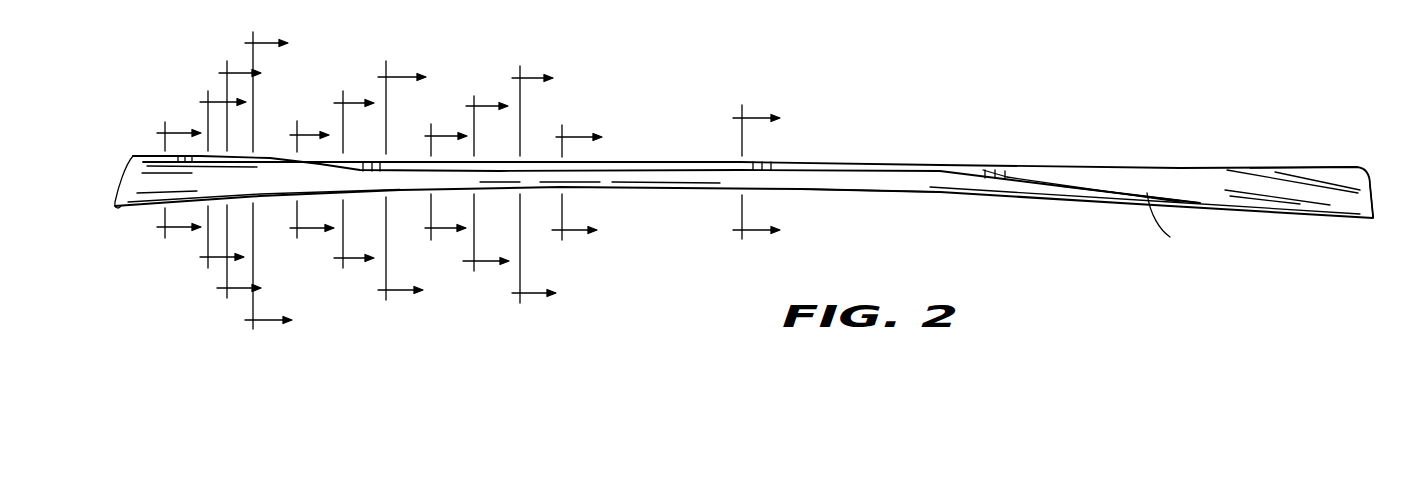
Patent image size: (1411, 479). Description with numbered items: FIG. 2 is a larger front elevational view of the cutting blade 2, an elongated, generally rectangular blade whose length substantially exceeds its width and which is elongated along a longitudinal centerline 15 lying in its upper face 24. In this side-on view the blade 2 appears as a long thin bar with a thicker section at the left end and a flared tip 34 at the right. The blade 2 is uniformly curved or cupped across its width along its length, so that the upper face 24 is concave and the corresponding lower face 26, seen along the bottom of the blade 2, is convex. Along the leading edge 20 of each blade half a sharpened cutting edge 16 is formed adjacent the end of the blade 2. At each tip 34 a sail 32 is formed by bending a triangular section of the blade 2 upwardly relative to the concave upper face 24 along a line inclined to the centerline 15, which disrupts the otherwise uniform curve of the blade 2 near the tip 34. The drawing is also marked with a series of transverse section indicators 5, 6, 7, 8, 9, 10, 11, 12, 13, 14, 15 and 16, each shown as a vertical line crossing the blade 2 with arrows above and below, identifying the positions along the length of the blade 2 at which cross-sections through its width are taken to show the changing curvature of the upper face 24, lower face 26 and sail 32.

The cutting blade 2 is at (1062, 112).
The section line 5- 5 is at (740, 173).
The section line 6- 6 is at (564, 183).
The section line 7- 7 is at (523, 185).
The section line 8- 8 is at (473, 184).
The section line 9- 9 is at (434, 182).
The section line 10- 10 is at (380, 183).
The section line 11- 11 is at (338, 181).
The section line 12- 12 is at (295, 182).
The section line 13- 13 is at (246, 181).
The section line 14- 14 is at (222, 181).
The longitudinal centerline 15 is at (200, 179).
The cutting edge 16 is at (658, 183).
The leading edge 20 is at (980, 168).
The upper face 24 is at (1113, 177).
The lower face 26 is at (842, 178).
The sail 32 is at (1308, 169).
The tip 34 is at (1373, 190).